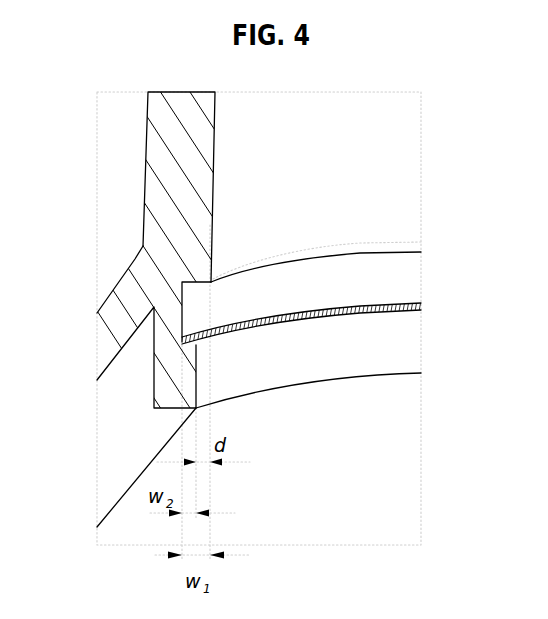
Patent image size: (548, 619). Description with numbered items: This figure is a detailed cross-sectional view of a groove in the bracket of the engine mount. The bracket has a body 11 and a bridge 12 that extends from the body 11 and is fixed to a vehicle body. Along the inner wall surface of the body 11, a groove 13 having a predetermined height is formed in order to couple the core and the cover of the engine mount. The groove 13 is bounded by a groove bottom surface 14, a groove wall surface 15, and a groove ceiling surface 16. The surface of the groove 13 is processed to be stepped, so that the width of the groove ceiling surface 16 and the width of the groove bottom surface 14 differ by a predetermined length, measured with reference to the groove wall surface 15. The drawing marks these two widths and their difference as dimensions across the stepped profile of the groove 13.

The body 11 is at (145, 169).
The bridge 12 is at (117, 328).
The groove 13 is at (197, 308).
The groove bottom surface 14 is at (376, 306).
The groove wall surface 15 is at (328, 283).
The groove ceiling surface 16 is at (378, 245).